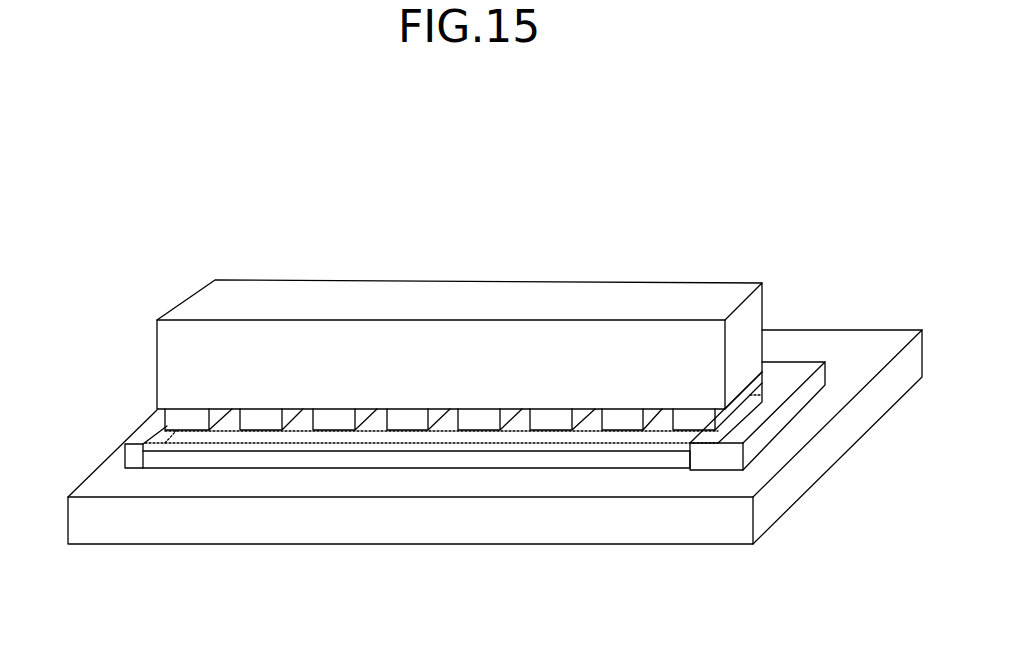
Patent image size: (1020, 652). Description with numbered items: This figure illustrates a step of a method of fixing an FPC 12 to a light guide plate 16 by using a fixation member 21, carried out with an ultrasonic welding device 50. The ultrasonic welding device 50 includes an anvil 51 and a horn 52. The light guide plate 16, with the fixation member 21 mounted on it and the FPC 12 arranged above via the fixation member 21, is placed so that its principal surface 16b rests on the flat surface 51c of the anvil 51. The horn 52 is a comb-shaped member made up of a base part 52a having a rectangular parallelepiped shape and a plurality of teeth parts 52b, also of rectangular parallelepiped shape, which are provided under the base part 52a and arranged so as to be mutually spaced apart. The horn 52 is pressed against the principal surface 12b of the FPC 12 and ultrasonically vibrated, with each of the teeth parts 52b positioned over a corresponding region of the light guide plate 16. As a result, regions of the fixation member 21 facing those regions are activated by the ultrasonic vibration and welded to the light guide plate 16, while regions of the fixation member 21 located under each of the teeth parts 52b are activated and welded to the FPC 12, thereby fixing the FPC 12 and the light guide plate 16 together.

The FPC 12 is at (261, 488).
The principal surface of the FPC 12b is at (180, 440).
The light guide plate 16 is at (789, 343).
The principal surface of the light guide plate 16b is at (812, 407).
The fixation member 21 is at (742, 420).
The ultrasonic welding device 50 is at (50, 337).
The anvil 51 is at (80, 458).
The flat surface of the anvil 51c is at (457, 487).
The horn 52 is at (132, 338).
The base part 52a is at (728, 290).
The teeth parts 52b is at (197, 425).